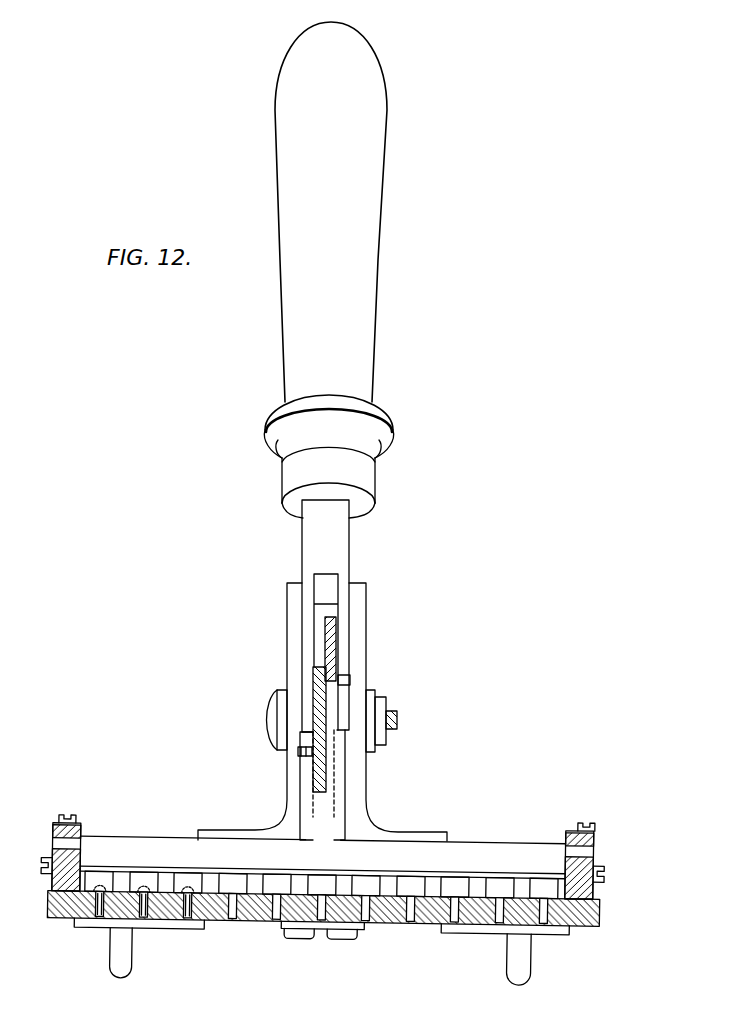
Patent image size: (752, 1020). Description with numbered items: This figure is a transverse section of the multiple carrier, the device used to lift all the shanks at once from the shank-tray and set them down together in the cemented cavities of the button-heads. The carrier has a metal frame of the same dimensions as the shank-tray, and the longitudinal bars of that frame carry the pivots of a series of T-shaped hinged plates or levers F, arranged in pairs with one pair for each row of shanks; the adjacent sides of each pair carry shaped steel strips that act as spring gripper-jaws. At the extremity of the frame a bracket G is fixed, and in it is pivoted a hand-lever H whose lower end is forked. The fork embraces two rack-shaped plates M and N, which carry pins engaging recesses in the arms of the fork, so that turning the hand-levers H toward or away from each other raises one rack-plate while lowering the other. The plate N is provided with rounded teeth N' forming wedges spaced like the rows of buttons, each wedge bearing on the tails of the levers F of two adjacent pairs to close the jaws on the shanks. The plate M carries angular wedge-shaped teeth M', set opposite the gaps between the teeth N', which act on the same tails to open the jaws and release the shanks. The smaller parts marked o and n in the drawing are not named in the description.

The hand-lever H is at (328, 377).
The bracket G is at (291, 798).
The T-shaped hinged plate or lever F is at (321, 901).
The rack-shaped plate M is at (338, 649).
The angular wedge-shaped teeth M' is at (334, 709).
The rack-shaped plate N is at (290, 725).
The rounded teeth N' is at (282, 764).
The lower guide pieces o is at (322, 785).
The rivets / pins n is at (233, 920).